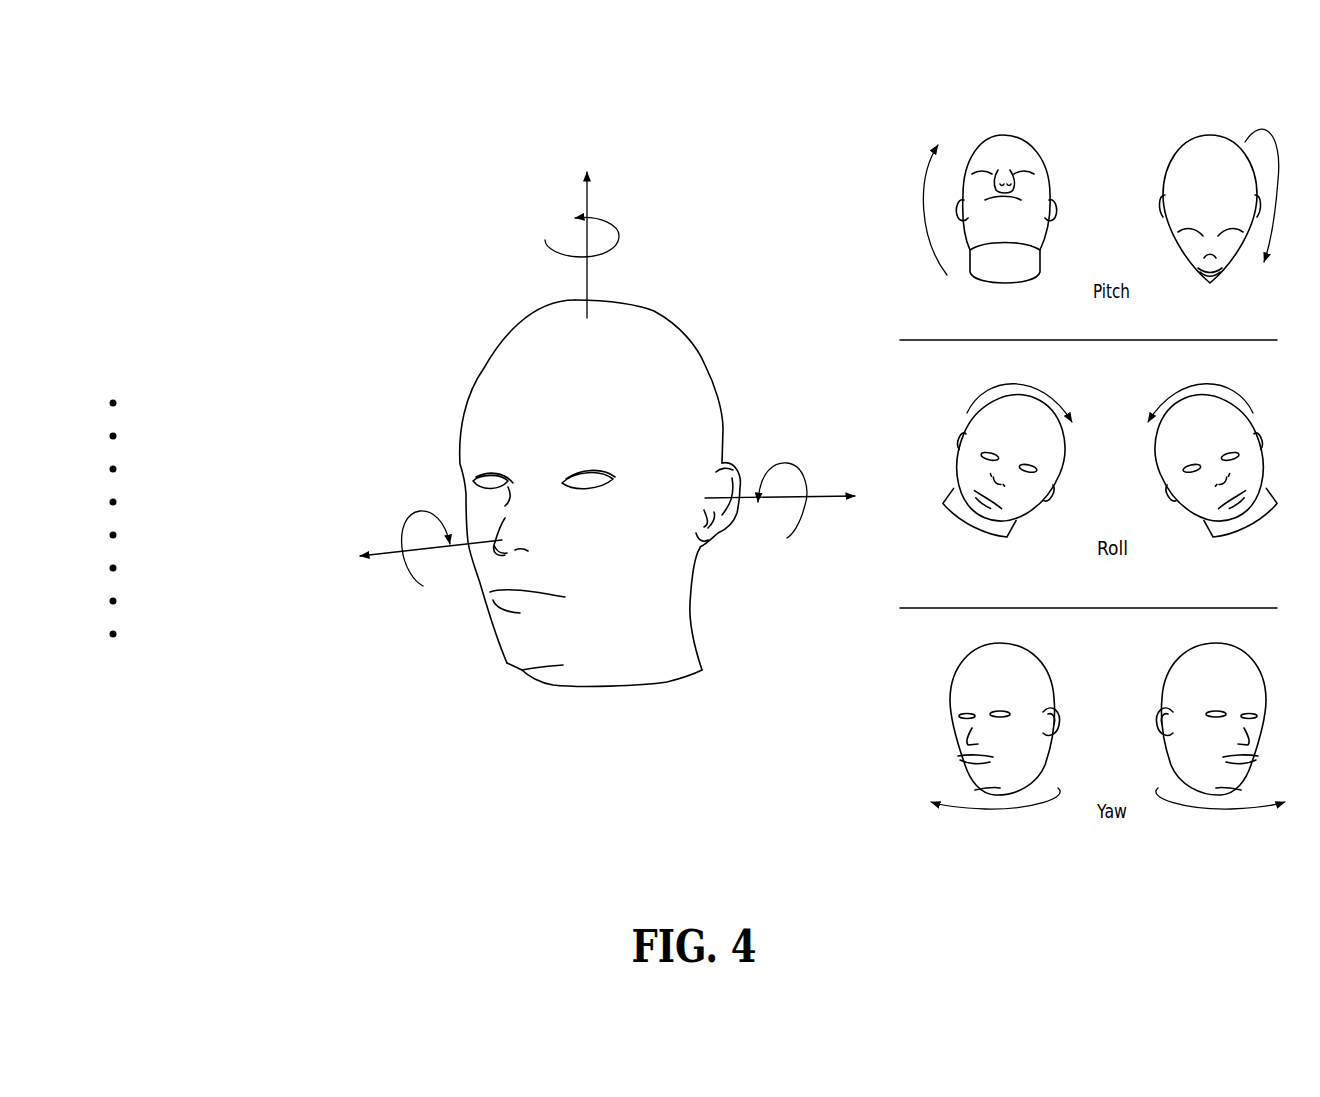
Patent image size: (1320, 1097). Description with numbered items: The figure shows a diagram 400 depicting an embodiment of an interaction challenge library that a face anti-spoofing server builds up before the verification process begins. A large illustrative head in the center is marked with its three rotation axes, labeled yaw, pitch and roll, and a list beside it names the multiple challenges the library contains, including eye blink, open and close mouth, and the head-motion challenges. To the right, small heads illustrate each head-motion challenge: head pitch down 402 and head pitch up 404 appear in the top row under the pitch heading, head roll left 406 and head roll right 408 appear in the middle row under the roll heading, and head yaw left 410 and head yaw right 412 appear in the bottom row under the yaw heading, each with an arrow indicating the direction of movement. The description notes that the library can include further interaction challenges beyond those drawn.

The diagram 400 is at (128, 132).
The head pitch down 402 is at (1188, 332).
The head pitch up 404 is at (1018, 332).
The head roll left 406 is at (1188, 595).
The head roll right 408 is at (1018, 595).
The head yaw left 410 is at (1188, 872).
The head yaw right 412 is at (1018, 872).